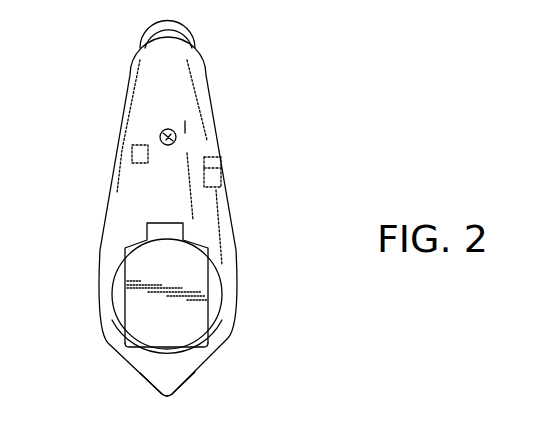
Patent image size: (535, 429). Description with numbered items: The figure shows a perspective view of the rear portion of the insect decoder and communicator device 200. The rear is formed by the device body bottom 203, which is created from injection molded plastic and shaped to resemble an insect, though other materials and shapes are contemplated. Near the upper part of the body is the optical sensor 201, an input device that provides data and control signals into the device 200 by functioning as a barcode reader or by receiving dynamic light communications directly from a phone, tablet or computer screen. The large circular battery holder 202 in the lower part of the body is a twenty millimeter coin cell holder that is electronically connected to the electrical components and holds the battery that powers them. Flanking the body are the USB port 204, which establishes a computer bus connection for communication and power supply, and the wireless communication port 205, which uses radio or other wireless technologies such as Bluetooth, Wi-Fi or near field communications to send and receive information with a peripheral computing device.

The insect decoder and communicator device 200 is at (385, 112).
The optical sensor 201 is at (178, 134).
The battery holder 202 is at (138, 300).
The device body bottom 203 is at (168, 384).
The USB port 204 is at (220, 173).
The wireless communication port 205 is at (137, 157).